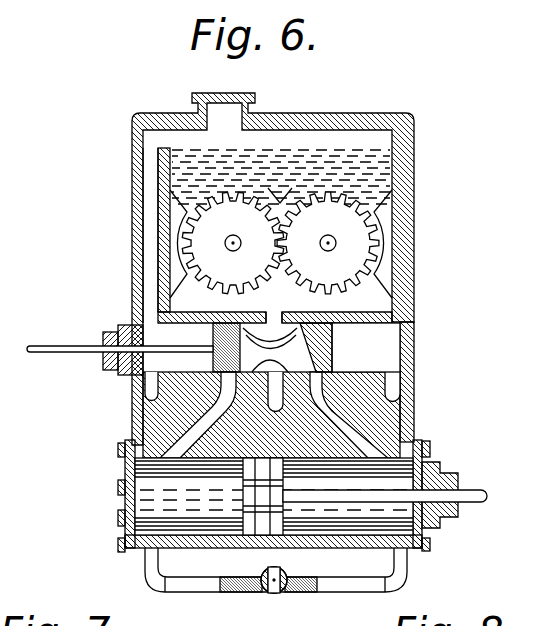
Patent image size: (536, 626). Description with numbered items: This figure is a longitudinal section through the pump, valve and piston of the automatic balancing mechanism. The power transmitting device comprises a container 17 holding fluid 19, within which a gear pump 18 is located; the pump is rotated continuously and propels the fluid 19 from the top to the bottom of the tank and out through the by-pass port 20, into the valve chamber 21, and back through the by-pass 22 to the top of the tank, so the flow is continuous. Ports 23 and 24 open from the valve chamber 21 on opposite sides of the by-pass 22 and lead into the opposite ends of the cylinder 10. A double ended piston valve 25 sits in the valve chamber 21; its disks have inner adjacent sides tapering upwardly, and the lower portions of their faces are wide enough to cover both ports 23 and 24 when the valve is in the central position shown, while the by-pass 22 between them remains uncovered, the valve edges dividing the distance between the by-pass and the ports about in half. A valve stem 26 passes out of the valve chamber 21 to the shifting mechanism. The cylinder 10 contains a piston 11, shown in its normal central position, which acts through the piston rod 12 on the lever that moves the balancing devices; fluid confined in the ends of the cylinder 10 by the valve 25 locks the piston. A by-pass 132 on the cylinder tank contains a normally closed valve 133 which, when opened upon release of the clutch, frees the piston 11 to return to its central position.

The cylinder 10 is at (276, 570).
The piston 11 is at (281, 509).
The piston rod 12 is at (468, 498).
The container 17 is at (405, 169).
The gear pump 18 is at (280, 243).
The fluid 19 is at (312, 163).
The by-pass port 20 is at (271, 322).
The valve chamber 21 is at (366, 347).
The by-pass 22 is at (137, 284).
The port 23 is at (158, 446).
The port 24 is at (410, 433).
The double ended piston valve 25 is at (312, 352).
The valve stem 26 is at (68, 352).
The by-pass 132 is at (233, 583).
The by-pass valve 133 is at (283, 591).